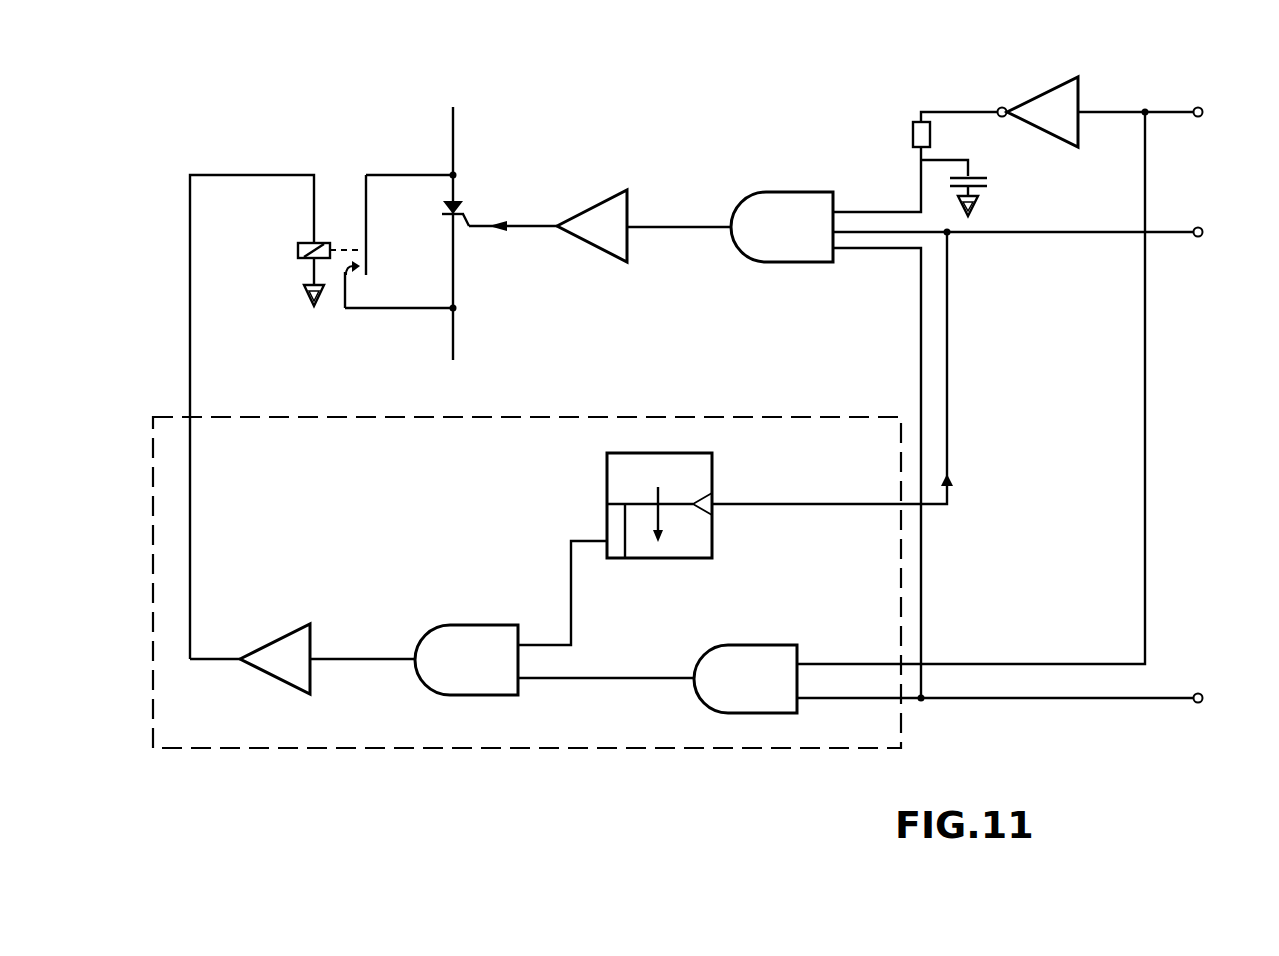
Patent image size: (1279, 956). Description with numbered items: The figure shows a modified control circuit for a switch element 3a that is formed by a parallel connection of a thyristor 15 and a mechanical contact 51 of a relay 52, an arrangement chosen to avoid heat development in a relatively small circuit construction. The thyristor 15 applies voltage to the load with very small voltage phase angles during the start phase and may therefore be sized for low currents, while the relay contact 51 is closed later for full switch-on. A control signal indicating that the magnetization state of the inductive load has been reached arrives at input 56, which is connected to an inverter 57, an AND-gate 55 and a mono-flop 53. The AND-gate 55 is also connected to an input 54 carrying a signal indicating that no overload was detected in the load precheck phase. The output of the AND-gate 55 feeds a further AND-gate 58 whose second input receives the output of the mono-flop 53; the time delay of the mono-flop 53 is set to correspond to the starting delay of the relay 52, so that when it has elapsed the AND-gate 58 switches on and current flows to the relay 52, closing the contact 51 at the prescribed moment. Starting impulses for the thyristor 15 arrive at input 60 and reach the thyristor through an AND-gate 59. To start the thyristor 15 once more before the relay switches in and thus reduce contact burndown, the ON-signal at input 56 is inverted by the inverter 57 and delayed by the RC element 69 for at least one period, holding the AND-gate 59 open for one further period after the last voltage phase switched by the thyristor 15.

The switch element 3a is at (330, 112).
The thyristor 15 is at (458, 204).
The relay contact 51 is at (374, 292).
The relay 52 is at (300, 243).
The mono-flop 53 is at (712, 551).
The input 54 is at (1202, 695).
The AND-gate 55 is at (763, 694).
The input 56 is at (1200, 108).
The inverter 57 is at (1045, 98).
The AND-gate 58 is at (485, 674).
The AND-gate 59 is at (806, 240).
The input 60 is at (1201, 229).
The RC element 69 is at (933, 132).